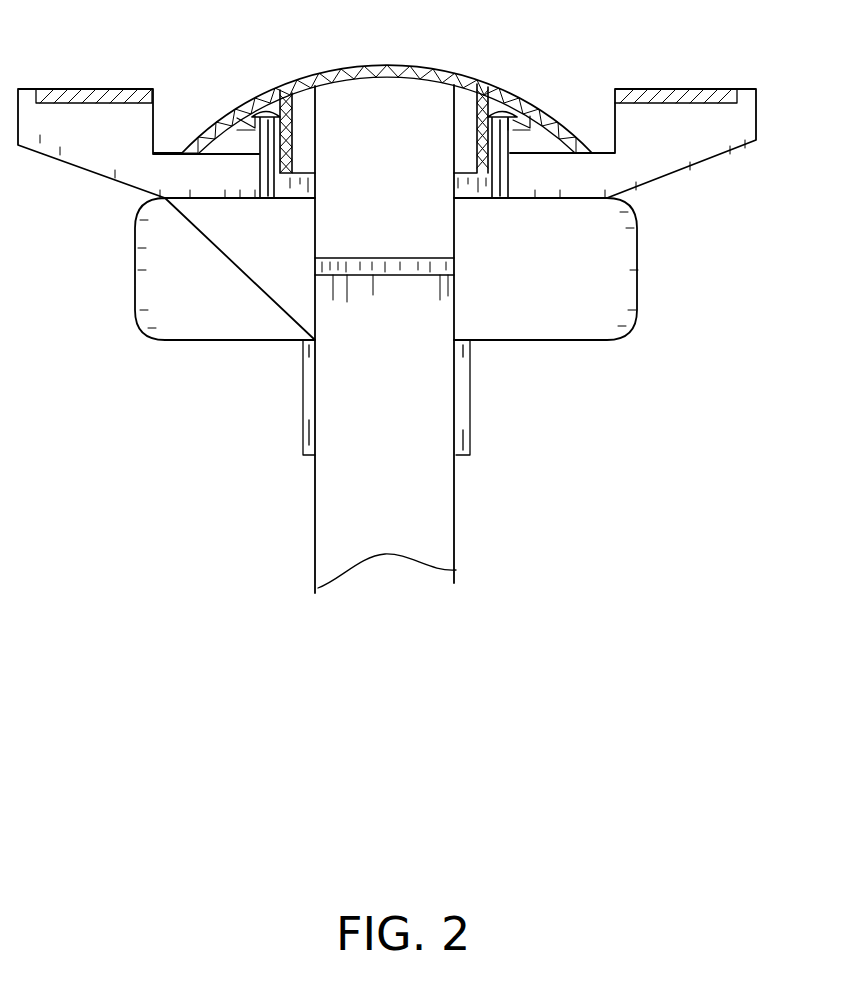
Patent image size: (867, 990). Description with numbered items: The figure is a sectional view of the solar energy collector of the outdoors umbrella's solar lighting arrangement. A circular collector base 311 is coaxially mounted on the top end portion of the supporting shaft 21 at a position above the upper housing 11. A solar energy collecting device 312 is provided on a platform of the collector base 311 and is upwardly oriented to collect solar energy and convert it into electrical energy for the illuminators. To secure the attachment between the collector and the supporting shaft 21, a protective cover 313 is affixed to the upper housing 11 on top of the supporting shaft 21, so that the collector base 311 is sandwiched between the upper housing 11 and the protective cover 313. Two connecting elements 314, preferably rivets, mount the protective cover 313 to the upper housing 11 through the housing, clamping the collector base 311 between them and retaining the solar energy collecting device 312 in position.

The upper housing 11 is at (570, 328).
The supporting shaft 21 is at (443, 492).
The collector base 311 is at (710, 142).
The solar energy collecting device 312 is at (108, 97).
The protective cover 313 is at (463, 75).
The connecting elements 314 is at (268, 110).